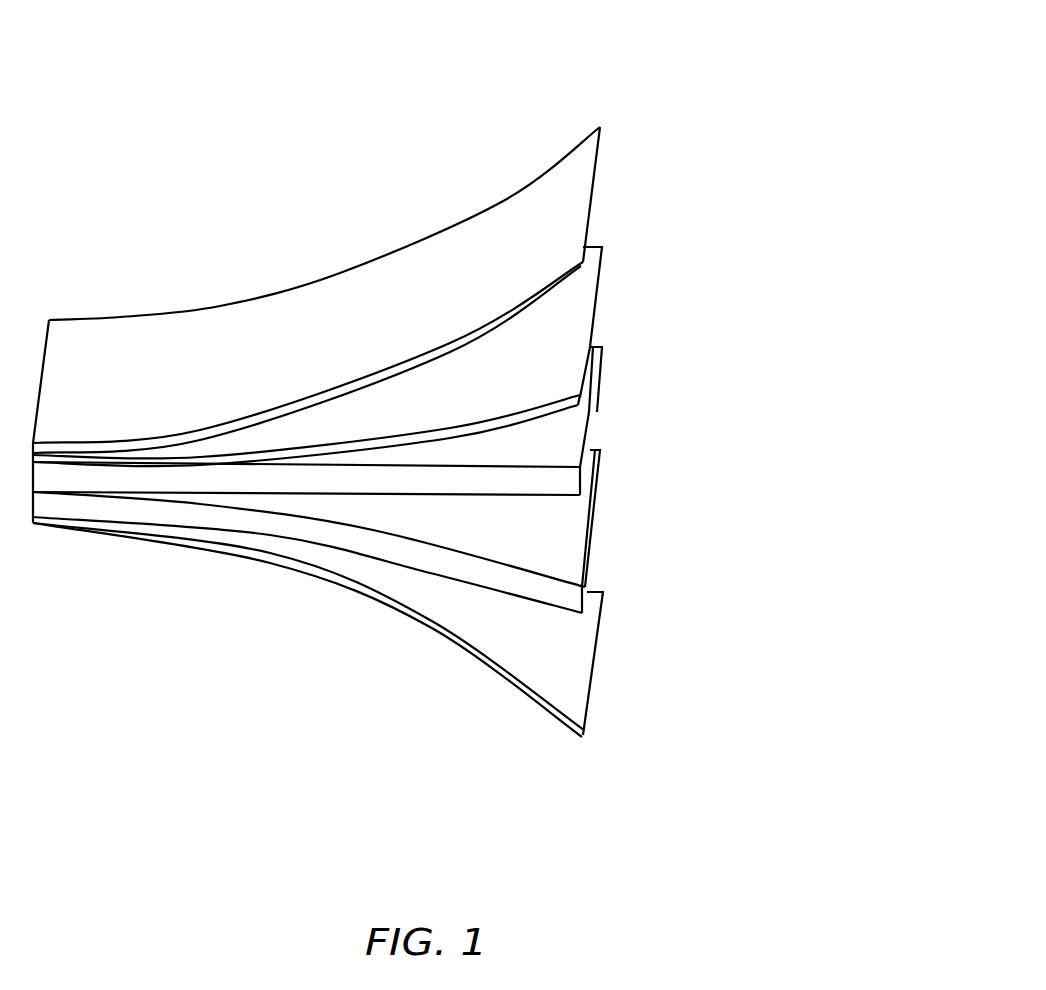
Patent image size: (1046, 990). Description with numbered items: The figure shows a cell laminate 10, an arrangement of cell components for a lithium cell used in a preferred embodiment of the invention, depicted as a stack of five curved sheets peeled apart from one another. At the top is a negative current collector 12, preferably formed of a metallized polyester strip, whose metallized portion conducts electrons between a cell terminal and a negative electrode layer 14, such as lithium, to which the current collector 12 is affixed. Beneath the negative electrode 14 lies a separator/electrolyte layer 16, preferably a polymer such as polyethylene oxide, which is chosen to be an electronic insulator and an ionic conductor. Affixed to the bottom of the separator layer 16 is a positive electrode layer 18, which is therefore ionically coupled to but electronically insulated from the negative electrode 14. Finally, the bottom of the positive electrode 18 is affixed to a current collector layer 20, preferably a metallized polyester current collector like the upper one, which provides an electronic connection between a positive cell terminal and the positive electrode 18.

The cell laminate 10 is at (683, 17).
The negative current collector 12 is at (505, 200).
The negative electrode layer 14 is at (597, 270).
The separator/electrolyte layer 16 is at (597, 410).
The positive electrode layer 18 is at (593, 527).
The current collector layer 20 is at (518, 680).